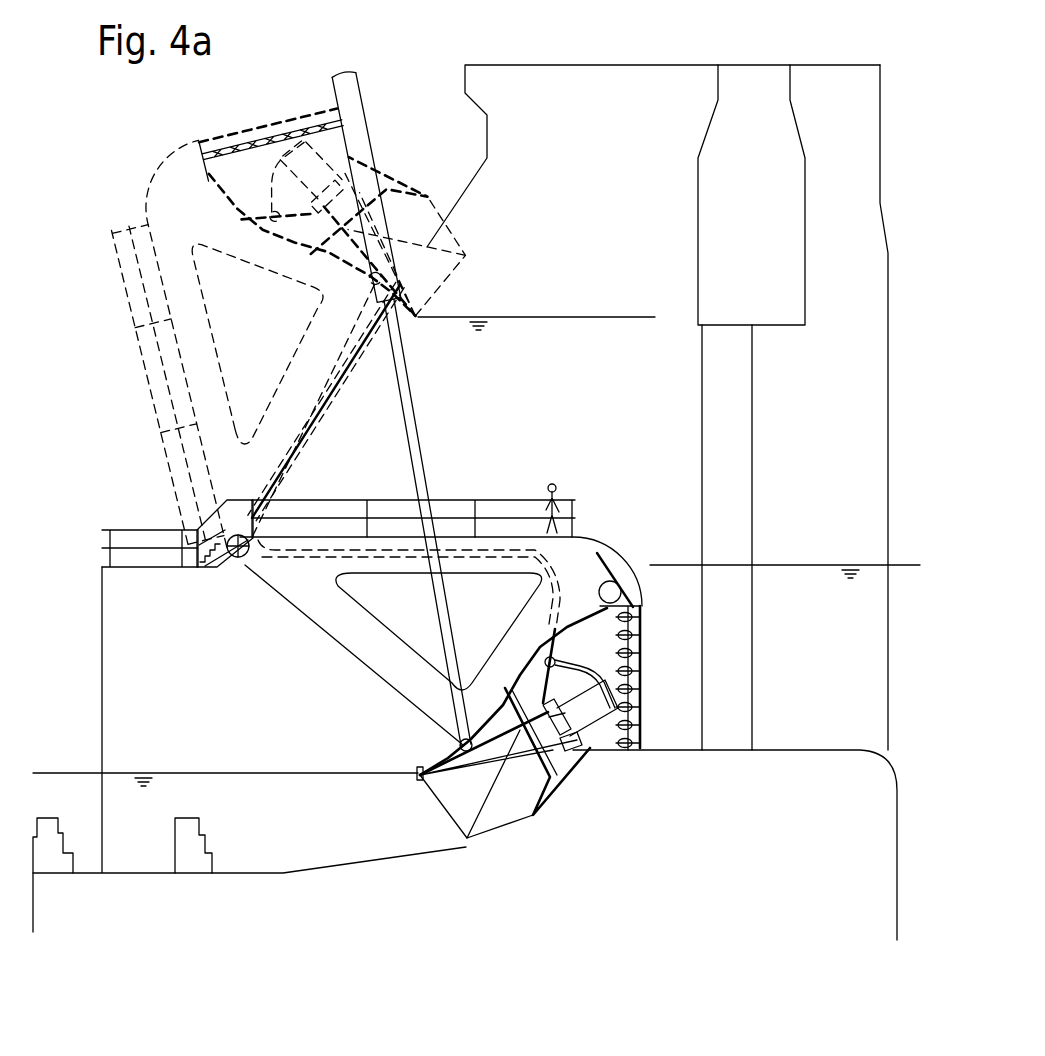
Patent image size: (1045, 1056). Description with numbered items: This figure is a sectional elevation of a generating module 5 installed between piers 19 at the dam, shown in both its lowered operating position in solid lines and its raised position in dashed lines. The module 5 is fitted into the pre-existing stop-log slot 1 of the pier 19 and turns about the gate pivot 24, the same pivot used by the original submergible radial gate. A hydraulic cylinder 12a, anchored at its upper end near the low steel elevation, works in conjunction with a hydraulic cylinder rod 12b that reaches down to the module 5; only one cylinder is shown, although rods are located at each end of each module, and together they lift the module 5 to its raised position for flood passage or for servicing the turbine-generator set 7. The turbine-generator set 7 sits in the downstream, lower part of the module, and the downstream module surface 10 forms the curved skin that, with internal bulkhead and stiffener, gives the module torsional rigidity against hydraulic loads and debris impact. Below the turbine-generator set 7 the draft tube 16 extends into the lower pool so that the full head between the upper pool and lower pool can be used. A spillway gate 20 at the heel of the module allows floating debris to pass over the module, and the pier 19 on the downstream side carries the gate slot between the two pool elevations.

The stop-log slot 1 is at (736, 421).
The generating module 5 is at (595, 657).
The turbine-generator set 7 is at (564, 732).
The downstream module surface 10 is at (369, 461).
The hydraulic cylinder 12a is at (376, 111).
The hydraulic cylinder rod 12b is at (414, 382).
The draft tube 16 is at (474, 804).
The pier 19 is at (598, 426).
The spillway gate 20 is at (629, 587).
The gate pivot 24 is at (238, 562).